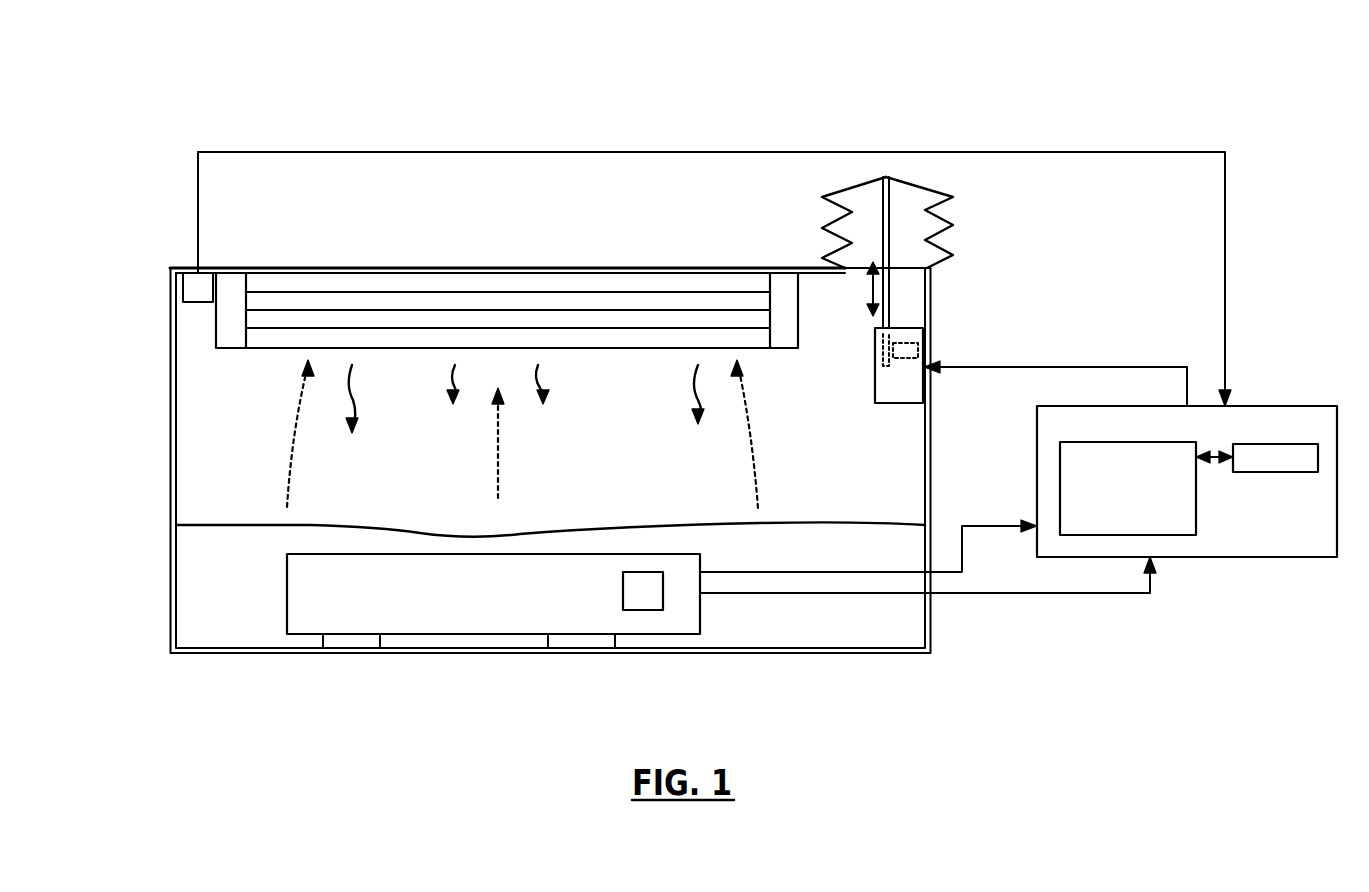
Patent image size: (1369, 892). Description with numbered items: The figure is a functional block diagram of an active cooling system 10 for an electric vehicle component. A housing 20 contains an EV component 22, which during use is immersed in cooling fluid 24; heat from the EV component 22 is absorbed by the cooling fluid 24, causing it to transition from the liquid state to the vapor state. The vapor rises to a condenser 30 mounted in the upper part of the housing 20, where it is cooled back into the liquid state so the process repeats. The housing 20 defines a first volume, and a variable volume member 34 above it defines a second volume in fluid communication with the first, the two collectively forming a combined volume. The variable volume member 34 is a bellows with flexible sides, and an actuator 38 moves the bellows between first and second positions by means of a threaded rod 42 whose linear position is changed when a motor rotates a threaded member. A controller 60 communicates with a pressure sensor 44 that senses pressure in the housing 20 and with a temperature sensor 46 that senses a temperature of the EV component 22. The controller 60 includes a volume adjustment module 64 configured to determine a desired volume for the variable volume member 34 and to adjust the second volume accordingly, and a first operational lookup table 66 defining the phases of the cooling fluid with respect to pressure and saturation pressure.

The active cooling system 10 is at (128, 138).
The housing 20 is at (170, 392).
The electric vehicle (EV) component 22 is at (497, 634).
The cooling fluid 24 is at (246, 525).
The condenser 30 is at (590, 348).
The variable volume member 34 is at (836, 224).
The actuator 38 is at (875, 385).
The threaded rod 42 is at (889, 291).
The pressure sensor 44 is at (198, 302).
The temperature sensor 46 is at (663, 608).
The controller 60 is at (1270, 406).
The volume adjustment module 64 is at (1060, 488).
The first operational lookup table (LUT) 66 is at (1283, 444).